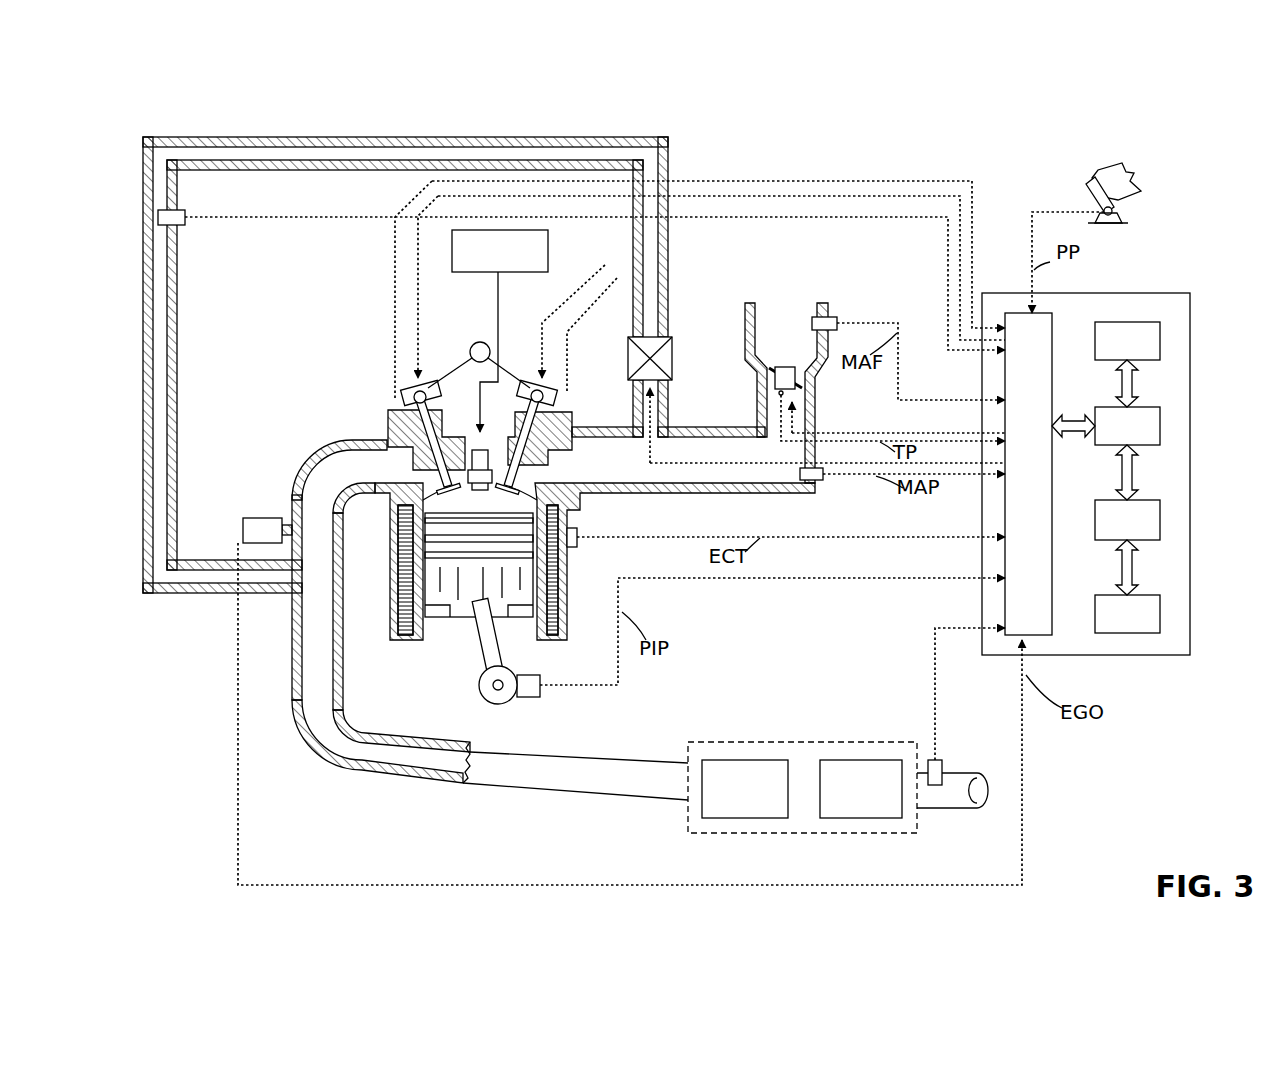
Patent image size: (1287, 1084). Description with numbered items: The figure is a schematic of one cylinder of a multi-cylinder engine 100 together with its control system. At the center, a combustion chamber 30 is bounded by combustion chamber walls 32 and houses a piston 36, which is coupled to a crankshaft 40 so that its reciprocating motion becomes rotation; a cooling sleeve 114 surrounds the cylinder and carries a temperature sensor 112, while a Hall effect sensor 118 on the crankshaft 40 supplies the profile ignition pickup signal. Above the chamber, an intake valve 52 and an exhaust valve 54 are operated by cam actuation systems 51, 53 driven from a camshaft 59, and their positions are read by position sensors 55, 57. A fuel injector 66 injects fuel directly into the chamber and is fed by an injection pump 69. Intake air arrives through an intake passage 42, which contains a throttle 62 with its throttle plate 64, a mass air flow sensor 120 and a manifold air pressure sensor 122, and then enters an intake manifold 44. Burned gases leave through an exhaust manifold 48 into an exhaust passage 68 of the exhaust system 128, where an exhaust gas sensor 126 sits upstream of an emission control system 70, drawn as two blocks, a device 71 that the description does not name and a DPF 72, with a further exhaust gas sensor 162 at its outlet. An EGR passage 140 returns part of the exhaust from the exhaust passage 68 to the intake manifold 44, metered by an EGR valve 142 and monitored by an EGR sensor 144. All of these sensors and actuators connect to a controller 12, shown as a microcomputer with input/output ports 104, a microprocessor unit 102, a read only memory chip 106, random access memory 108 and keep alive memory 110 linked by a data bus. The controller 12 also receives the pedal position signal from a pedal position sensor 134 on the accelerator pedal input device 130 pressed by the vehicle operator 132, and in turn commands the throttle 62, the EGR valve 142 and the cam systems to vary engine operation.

The controller 12 is at (1124, 461).
The combustion chamber 30 is at (395, 588).
The combustion chamber walls 32 is at (428, 637).
The piston 36 is at (465, 595).
The crankshaft 40 is at (721, 659).
The intake passage 42 is at (786, 393).
The intake manifold 44 is at (627, 468).
The exhaust manifold 48 is at (355, 470).
The cam actuation system 51 is at (532, 385).
The intake valve 52 is at (547, 472).
The cam actuation system 53 is at (425, 385).
The exhaust valve 54 is at (388, 450).
The position sensor 55 is at (552, 398).
The position sensor 57 is at (407, 392).
The camshaft 59 is at (477, 342).
The throttle 62 is at (805, 381).
The throttle plate 64 is at (770, 376).
The fuel injector 66 is at (482, 448).
The exhaust passage 68 is at (500, 787).
The injection pump 69 is at (500, 251).
The emission control system 70 is at (833, 810).
The catalyst 71 is at (745, 789).
The DPF 72 is at (861, 789).
The engine 100 is at (335, 370).
The microprocessor unit 102 is at (1160, 426).
The input/output ports 104 is at (1053, 322).
The read only memory chip 106 is at (1160, 336).
The random access memory 108 is at (1160, 516).
The keep alive memory 110 is at (1160, 613).
The temperature sensor 112 is at (578, 530).
The cooling sleeve 114 is at (557, 600).
The Hall effect sensor 118 is at (528, 697).
The mass air flow sensor 120 is at (835, 318).
The manifold air pressure sensor 122 is at (824, 481).
The exhaust gas sensor 126 is at (242, 519).
The exhaust system 128 is at (325, 778).
The input device 130 is at (1138, 228).
The vehicle operator 132 is at (1140, 180).
The pedal position sensor 134 is at (1118, 213).
The EGR passage 140 is at (405, 138).
The EGR valve 142 is at (672, 360).
The EGR sensor 144 is at (178, 226).
The exhaust gas sensor 162 is at (940, 761).